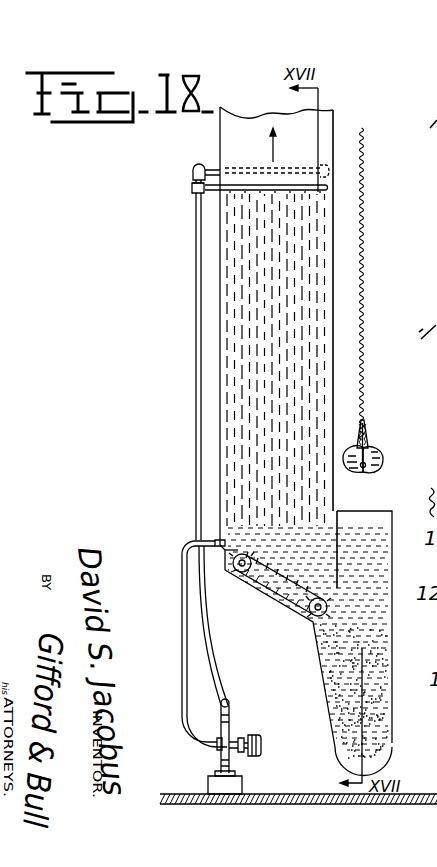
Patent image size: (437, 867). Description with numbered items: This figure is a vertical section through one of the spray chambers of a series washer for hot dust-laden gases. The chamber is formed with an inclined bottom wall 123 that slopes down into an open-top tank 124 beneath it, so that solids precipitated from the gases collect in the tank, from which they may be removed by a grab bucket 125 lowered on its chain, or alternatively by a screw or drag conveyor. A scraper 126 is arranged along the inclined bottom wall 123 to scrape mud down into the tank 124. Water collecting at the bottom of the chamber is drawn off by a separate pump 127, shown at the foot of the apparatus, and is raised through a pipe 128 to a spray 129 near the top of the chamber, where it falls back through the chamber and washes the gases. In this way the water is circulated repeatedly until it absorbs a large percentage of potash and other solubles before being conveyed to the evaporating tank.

The inclined bottom wall 123 is at (286, 608).
The open-top tank 124 is at (384, 691).
The grab bucket 125 is at (380, 461).
The scraper 126 is at (270, 594).
The pump 127 is at (230, 726).
The pipe 128 is at (198, 305).
The spray 129 is at (312, 164).